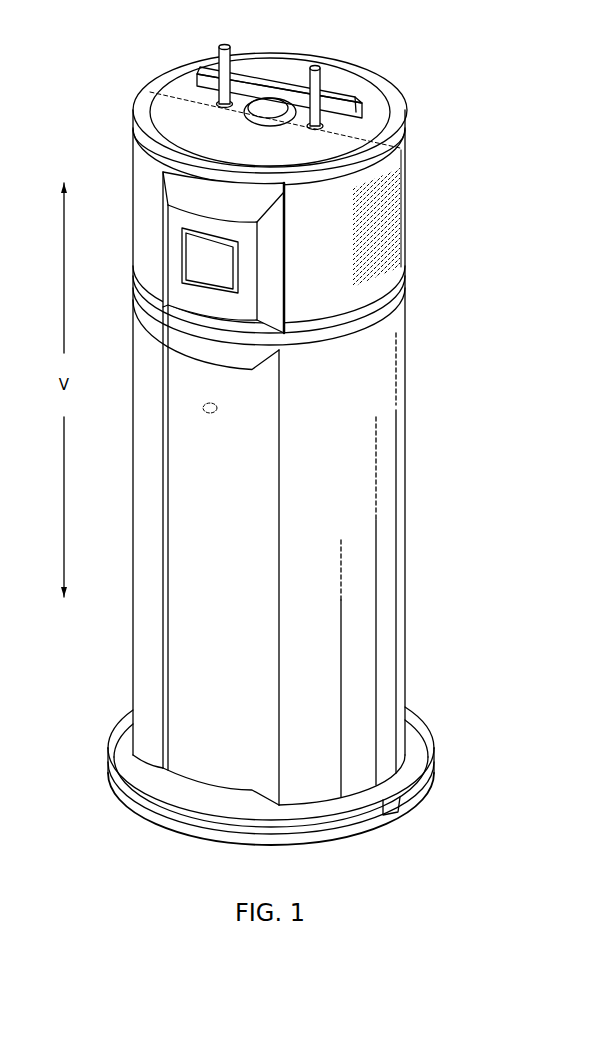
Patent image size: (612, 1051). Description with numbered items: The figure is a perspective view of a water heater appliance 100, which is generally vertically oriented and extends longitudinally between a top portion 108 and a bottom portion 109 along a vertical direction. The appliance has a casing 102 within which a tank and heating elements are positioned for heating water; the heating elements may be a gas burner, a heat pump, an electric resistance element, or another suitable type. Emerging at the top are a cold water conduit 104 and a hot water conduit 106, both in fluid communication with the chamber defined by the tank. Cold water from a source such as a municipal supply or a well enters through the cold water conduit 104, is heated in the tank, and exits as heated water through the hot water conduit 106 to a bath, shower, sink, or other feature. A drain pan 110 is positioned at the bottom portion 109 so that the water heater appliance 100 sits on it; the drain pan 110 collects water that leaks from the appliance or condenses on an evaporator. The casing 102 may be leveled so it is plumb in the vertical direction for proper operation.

The water heater appliance 100 is at (430, 93).
The casing 102 is at (385, 395).
The cold water conduit 104 is at (218, 53).
The hot water conduit 106 is at (322, 80).
The top portion 108 is at (120, 112).
The bottom portion 109 is at (100, 738).
The drain pan 110 is at (445, 745).